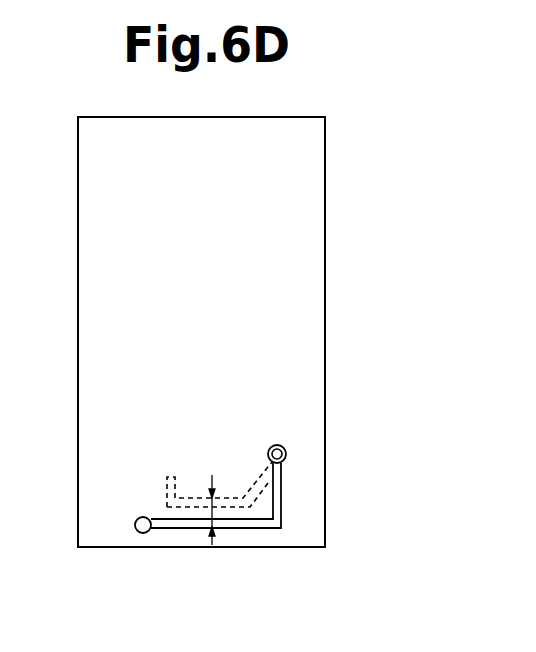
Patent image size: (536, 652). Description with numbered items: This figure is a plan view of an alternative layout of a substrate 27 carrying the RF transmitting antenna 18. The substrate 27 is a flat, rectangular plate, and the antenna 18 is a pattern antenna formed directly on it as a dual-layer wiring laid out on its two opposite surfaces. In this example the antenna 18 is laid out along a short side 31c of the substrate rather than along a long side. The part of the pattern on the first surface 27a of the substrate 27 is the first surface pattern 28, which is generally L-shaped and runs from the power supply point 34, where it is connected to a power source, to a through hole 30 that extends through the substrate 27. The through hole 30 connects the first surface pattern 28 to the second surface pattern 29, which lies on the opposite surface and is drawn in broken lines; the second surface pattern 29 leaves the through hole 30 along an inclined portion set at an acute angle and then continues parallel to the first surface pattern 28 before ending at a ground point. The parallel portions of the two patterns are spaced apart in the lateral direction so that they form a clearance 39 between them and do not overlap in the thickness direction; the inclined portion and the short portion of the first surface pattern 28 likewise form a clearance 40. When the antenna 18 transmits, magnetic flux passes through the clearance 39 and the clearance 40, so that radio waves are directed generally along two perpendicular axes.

The RF transmitting antenna 18 is at (249, 490).
The substrate 27 is at (325, 430).
The first surface 27a is at (325, 249).
The first surface pattern 28 is at (189, 531).
The second surface pattern 29 is at (232, 492).
The through hole 30 is at (279, 445).
The short side 31c is at (262, 547).
The power supply point 34 is at (145, 517).
The clearance 39 is at (208, 500).
The clearance 40 is at (267, 493).